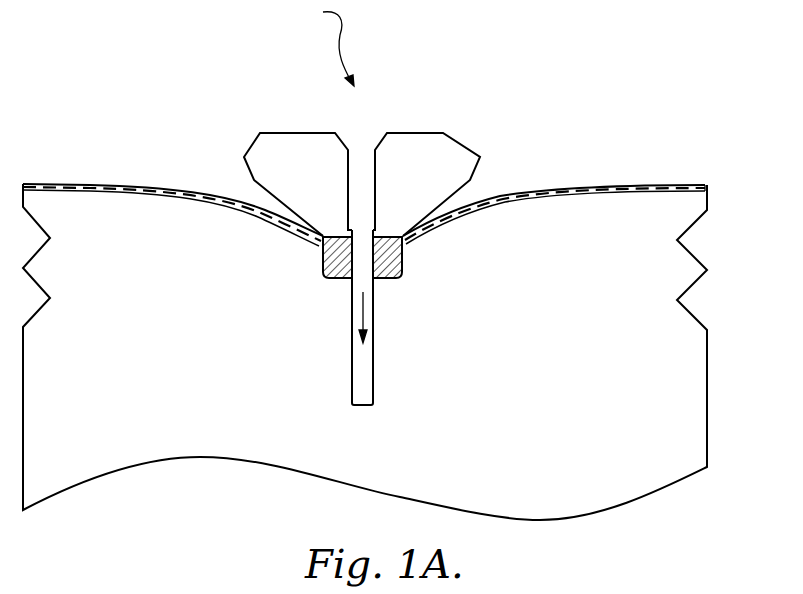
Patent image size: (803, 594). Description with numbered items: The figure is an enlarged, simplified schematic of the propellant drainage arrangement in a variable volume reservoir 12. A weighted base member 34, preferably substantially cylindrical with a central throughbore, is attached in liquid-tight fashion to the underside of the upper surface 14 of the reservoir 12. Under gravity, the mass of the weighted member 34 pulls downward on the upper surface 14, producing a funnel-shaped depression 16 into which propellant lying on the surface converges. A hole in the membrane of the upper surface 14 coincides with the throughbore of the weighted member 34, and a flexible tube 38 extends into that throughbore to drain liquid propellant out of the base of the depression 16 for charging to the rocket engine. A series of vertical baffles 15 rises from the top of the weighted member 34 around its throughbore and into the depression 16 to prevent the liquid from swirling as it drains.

The variable volume reservoir 12 is at (707, 350).
The upper surface 14 is at (593, 184).
The vertical baffles 15 is at (280, 133).
The funnel-shaped depression 16 is at (327, 44).
The weighted base member 34 is at (402, 268).
The flexible tube 38 is at (375, 355).